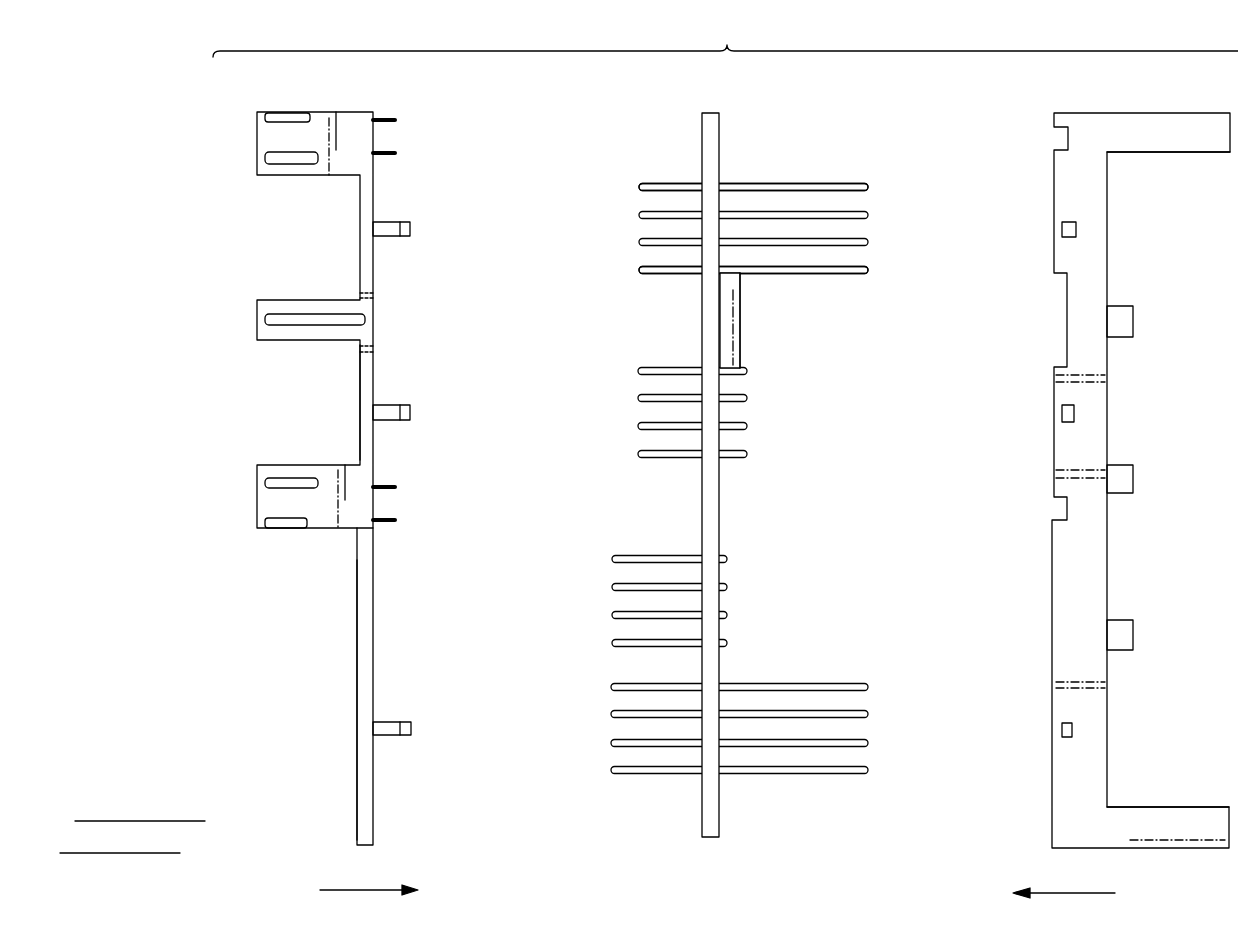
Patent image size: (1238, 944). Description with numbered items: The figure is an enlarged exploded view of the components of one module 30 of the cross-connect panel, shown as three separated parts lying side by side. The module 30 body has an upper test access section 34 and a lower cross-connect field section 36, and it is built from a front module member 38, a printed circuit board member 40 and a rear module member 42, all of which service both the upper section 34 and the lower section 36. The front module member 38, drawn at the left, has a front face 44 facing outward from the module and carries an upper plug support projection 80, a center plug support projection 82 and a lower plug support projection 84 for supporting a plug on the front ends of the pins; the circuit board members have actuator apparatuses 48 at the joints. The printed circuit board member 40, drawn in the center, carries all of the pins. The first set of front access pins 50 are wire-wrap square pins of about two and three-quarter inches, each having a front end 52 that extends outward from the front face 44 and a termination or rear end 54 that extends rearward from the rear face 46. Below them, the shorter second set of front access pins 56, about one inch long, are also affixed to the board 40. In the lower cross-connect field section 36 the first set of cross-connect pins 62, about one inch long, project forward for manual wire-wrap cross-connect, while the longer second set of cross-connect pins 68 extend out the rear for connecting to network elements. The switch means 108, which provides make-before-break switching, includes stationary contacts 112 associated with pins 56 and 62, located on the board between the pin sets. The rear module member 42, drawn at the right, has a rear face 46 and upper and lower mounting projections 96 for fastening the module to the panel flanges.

The module 30 is at (725, 36).
The upper test access section 34 is at (255, 247).
The lower cross-connect field section 36 is at (233, 672).
The front module member 38 is at (362, 478).
The printed circuit board member 40 is at (708, 147).
The rear module member 42 is at (1088, 280).
The front face 44 is at (358, 401).
The rear face 46 is at (1108, 415).
The actuator apparatus 48 is at (378, 298).
The first set of front access pins 50 is at (806, 215).
The front end 52 is at (639, 215).
The termination or rear end 54 is at (868, 242).
The second set of front access pins 56 is at (680, 455).
The first set of cross-connect pins 62 is at (657, 586).
The second set of cross-connect pins 68 is at (800, 714).
The upper plug support projection 80 is at (283, 140).
The center plug support projection 82 is at (260, 336).
The lower plug support projection 84 is at (275, 503).
The upper and lower mounting projections 96 is at (1190, 132).
The switch means 108 is at (745, 343).
The stationary contacts 112 is at (730, 285).